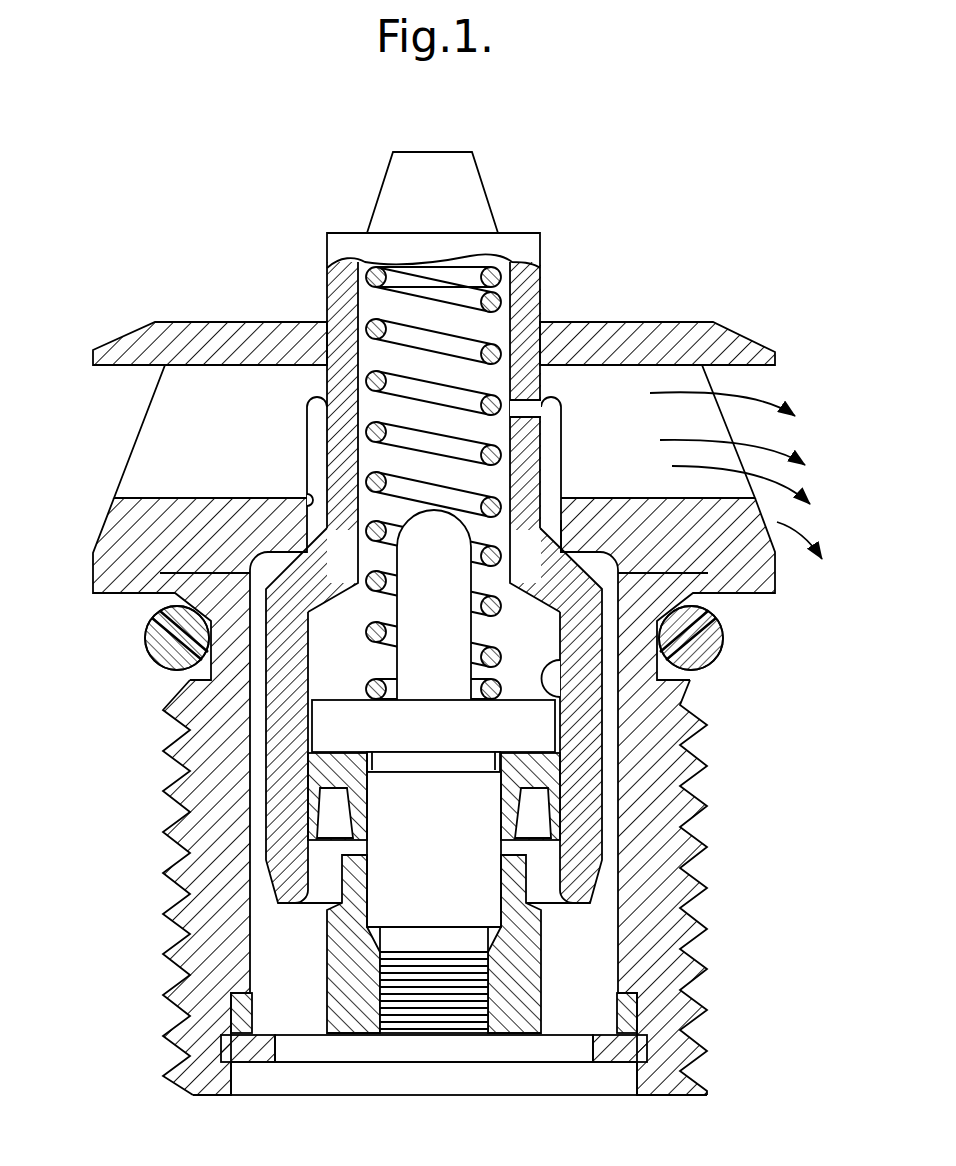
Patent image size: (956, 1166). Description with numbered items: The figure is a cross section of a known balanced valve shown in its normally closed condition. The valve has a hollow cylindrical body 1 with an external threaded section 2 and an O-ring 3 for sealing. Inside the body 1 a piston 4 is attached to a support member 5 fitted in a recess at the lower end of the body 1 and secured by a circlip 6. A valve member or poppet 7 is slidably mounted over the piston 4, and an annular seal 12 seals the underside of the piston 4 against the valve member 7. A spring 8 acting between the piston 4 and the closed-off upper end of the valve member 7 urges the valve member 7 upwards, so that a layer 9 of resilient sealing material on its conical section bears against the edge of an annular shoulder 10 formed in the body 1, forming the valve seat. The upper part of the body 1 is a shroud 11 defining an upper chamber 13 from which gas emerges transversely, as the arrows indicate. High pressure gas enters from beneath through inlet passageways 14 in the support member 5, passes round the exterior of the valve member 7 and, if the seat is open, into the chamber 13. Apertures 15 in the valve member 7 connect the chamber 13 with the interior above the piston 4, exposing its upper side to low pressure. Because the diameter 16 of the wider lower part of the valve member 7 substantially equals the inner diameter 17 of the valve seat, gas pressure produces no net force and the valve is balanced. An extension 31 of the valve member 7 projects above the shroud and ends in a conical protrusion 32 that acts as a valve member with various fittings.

The hollow cylindrical body 1 is at (103, 517).
The external threaded section 2 is at (703, 944).
The O-ring 3 is at (703, 627).
The piston 4 is at (323, 728).
The support member 5 is at (517, 1025).
The circlip 6 is at (623, 1063).
The valve member or poppet 7 is at (597, 748).
The spring 8 is at (375, 305).
The layer of resilient sealing material 9 is at (555, 540).
The annular shoulder 10 is at (165, 573).
The shroud 11 is at (197, 332).
The annular seal 12 is at (543, 770).
The upper chamber 13 is at (155, 458).
The inlet passageways 14 is at (268, 1012).
The apertures 15 is at (527, 410).
The diameter of the lower part of the valve member 16 is at (556, 697).
The inner diameter of the valve seat 17 is at (309, 497).
The extension of the valve member 31 is at (520, 255).
The conical protrusion 32 is at (417, 150).